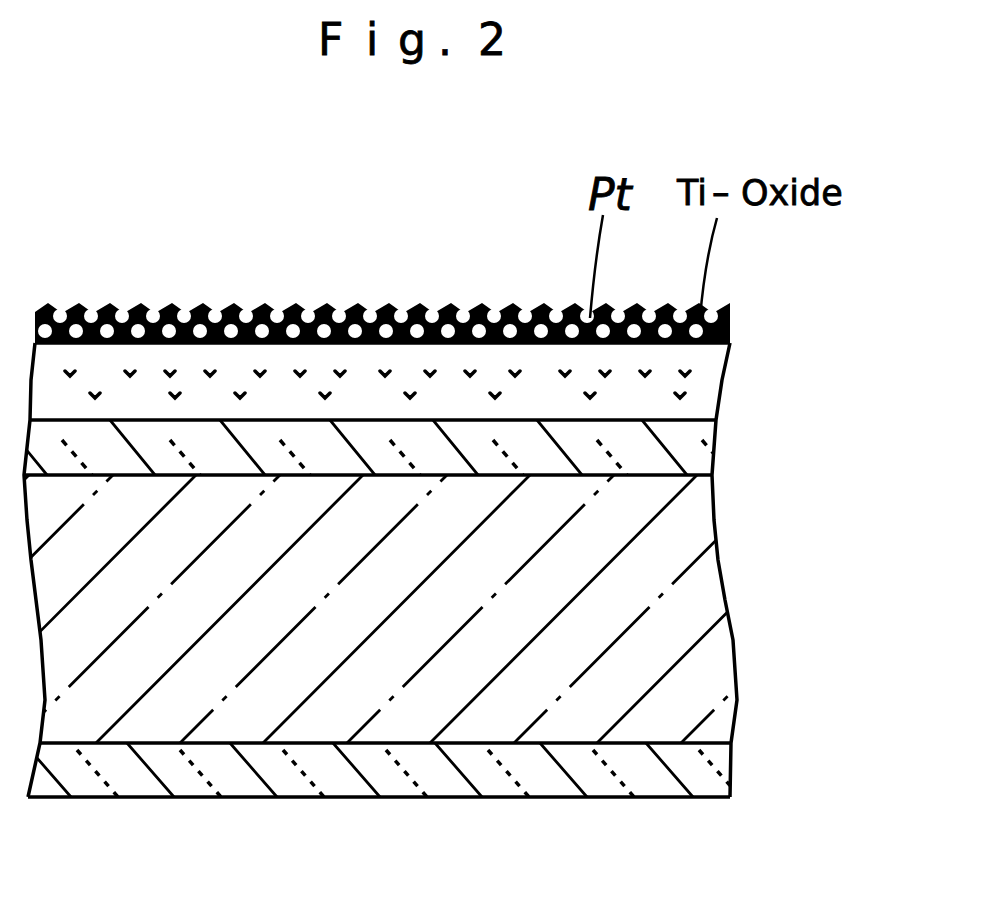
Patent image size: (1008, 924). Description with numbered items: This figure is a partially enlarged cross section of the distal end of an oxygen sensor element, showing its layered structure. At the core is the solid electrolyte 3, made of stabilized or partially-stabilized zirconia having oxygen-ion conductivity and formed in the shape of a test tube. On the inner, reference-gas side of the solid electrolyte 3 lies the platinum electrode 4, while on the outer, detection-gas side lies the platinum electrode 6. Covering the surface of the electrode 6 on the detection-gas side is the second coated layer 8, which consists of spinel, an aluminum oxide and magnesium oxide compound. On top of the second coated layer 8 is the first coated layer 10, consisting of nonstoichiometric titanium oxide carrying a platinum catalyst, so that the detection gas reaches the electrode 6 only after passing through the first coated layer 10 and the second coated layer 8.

The solid electrolyte 3 is at (714, 658).
The platinum electrode 4 is at (700, 780).
The platinum electrode 6 is at (680, 453).
The second coated layer 8 is at (700, 392).
The first coated layer 10 is at (725, 326).